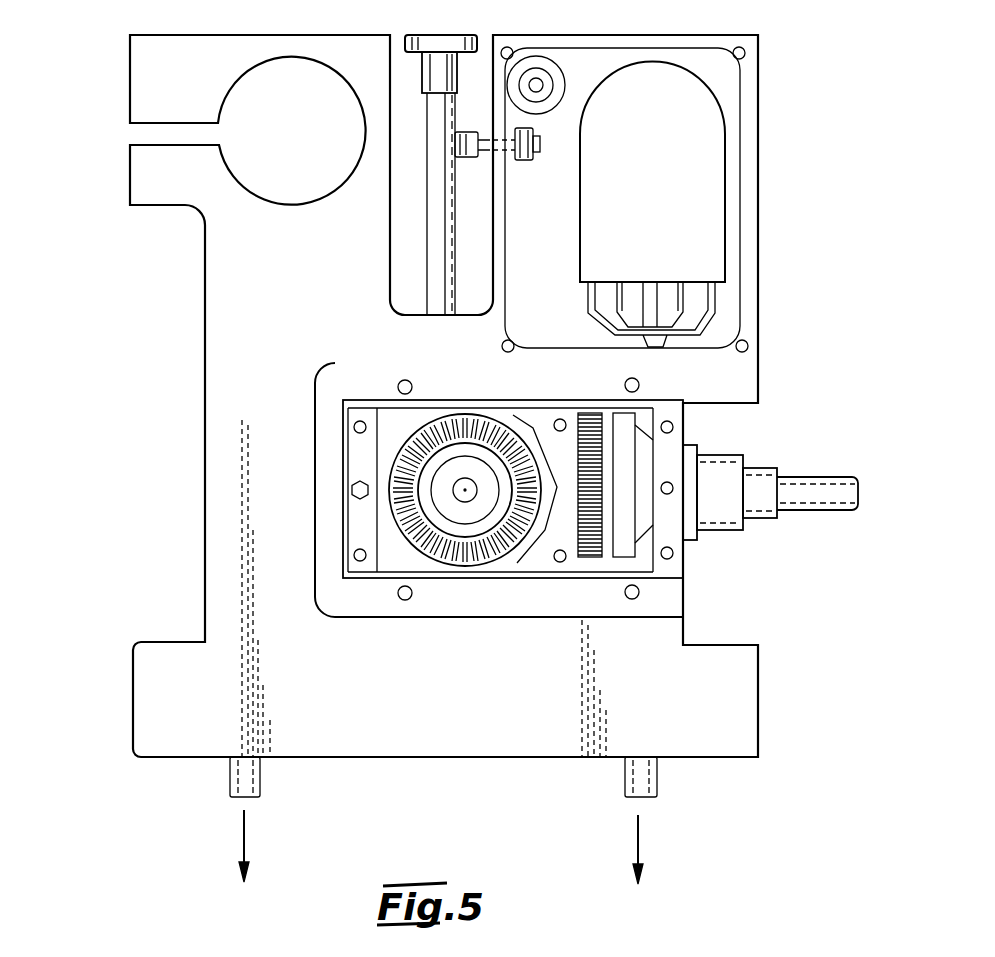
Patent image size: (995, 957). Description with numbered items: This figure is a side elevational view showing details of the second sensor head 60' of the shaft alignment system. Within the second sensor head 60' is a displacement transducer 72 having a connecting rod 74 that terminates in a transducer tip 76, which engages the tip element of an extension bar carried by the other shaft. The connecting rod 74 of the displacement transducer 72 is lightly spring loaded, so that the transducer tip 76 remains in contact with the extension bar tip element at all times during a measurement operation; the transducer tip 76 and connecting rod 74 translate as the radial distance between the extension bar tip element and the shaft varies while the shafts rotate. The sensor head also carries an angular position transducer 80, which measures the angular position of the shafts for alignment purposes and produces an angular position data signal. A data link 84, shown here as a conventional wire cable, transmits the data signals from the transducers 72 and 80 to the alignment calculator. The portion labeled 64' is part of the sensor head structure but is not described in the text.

The second sensor head 60' is at (444, 459).
The clamp arm 64' is at (213, 90).
The displacement transducer 72 is at (470, 530).
The connecting rod 74 is at (437, 237).
The transducer tip 76 is at (440, 35).
The angular position transducer 80 is at (703, 143).
The data link 84 is at (803, 477).